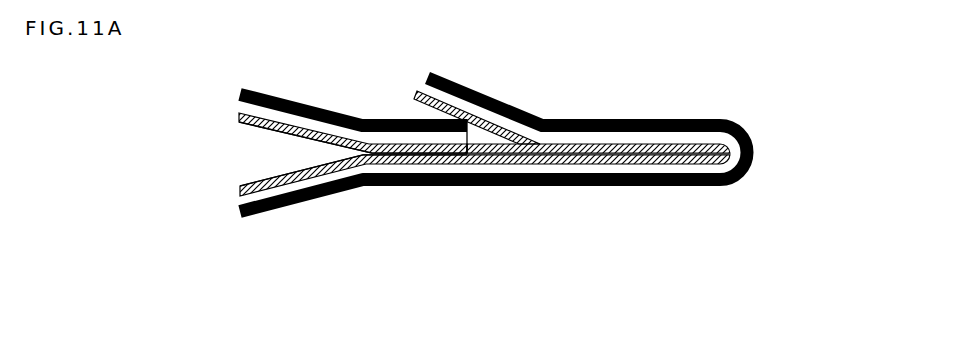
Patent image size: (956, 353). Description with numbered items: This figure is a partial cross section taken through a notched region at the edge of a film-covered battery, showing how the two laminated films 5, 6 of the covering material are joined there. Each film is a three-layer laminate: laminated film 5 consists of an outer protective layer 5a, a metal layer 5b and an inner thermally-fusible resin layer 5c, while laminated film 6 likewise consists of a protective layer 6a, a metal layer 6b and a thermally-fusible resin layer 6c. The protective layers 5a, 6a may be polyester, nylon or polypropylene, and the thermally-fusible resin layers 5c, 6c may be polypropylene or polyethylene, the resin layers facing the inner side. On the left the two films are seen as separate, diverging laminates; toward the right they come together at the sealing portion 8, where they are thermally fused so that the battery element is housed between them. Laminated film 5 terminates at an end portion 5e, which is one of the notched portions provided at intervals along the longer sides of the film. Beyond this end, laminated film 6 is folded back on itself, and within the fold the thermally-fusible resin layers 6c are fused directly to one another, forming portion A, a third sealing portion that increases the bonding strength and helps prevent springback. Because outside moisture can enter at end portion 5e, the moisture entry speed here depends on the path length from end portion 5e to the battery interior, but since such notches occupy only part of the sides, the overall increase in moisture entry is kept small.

The laminated film 5 is at (145, 80).
The protective layer 5a is at (238, 89).
The metal layer 5b is at (241, 106).
The thermally-fusible resin layer 5c is at (237, 119).
The notched portion 5e is at (468, 143).
The laminated film 6 is at (145, 203).
The protective layer 6a is at (237, 216).
The metal layer 6b is at (239, 203).
The thermally-fusible resin layer 6c is at (238, 189).
The sealing portion 8 is at (385, 118).
The portion (third sealing portion) A is at (615, 148).